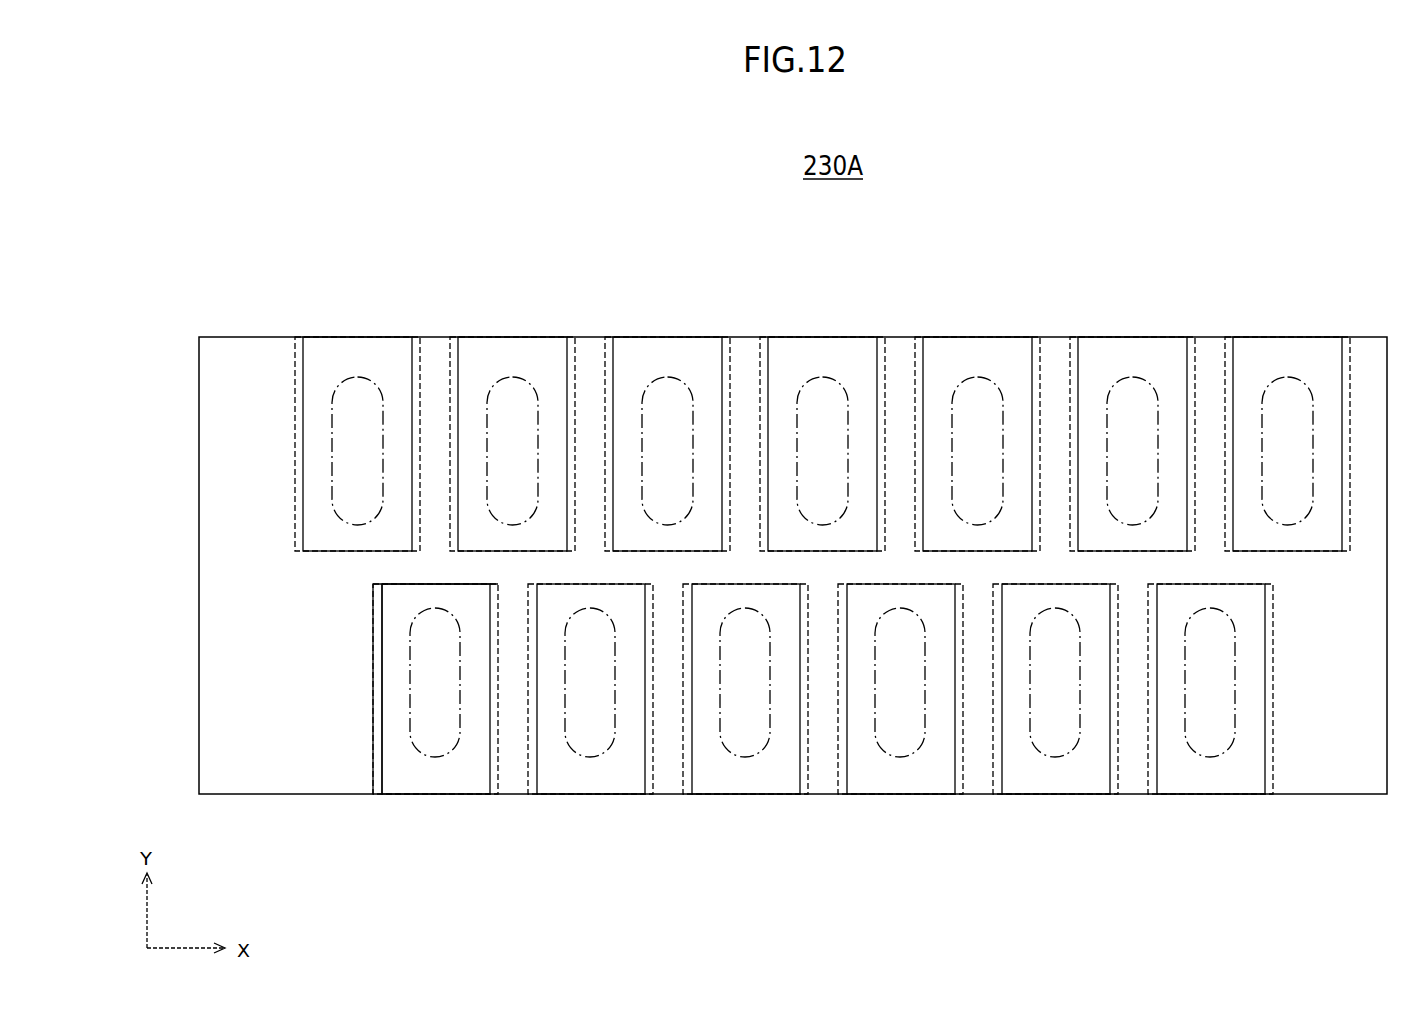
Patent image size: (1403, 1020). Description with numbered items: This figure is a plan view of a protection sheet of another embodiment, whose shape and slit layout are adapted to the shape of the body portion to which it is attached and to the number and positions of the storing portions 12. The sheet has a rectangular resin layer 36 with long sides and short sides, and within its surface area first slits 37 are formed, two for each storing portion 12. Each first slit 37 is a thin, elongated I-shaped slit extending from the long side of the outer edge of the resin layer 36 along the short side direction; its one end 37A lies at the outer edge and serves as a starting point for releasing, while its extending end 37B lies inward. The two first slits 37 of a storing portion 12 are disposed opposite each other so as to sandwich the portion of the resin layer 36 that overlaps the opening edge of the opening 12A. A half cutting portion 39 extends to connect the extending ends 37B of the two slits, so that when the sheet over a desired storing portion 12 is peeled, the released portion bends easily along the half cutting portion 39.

The resin layer 36 is at (254, 776).
The first slit 37 is at (380, 676).
The one end of first slit 37A is at (372, 794).
The extending end of first slit 37B is at (373, 588).
The half cutting portion 39 is at (410, 583).
The storing portion 12 is at (583, 705).
The opening of storing portion 12A is at (613, 714).